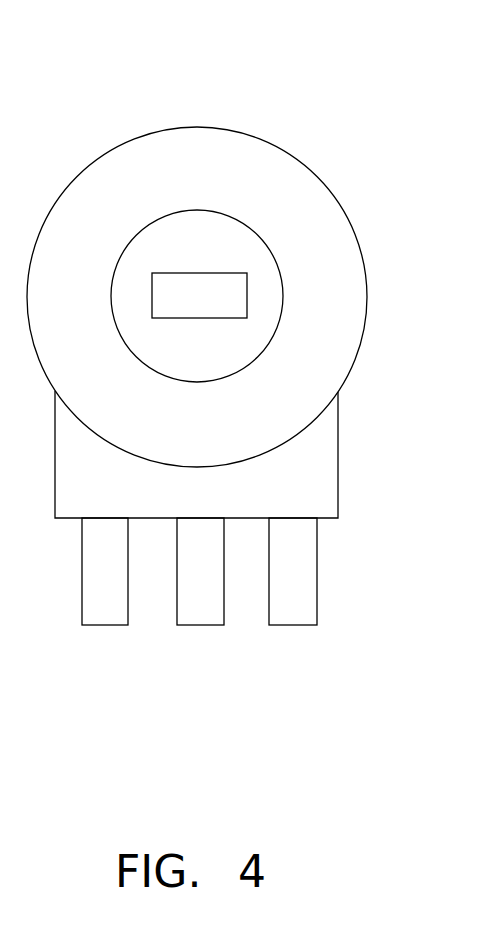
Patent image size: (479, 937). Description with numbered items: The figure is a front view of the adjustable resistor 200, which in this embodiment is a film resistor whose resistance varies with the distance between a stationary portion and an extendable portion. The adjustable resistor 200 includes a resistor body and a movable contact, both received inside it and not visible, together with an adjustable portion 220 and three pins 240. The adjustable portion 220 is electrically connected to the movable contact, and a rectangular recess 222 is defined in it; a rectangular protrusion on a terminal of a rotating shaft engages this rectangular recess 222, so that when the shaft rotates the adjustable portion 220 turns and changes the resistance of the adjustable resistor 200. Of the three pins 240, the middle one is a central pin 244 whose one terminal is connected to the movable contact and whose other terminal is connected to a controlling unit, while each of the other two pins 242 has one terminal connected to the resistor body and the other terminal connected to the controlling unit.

The adjustable resistor 200 is at (220, 60).
The adjustable portion 220 is at (225, 237).
The rectangular recess 222 is at (210, 298).
The pins 240 is at (199, 641).
The pin 242 is at (95, 611).
The central pin 244 is at (190, 607).